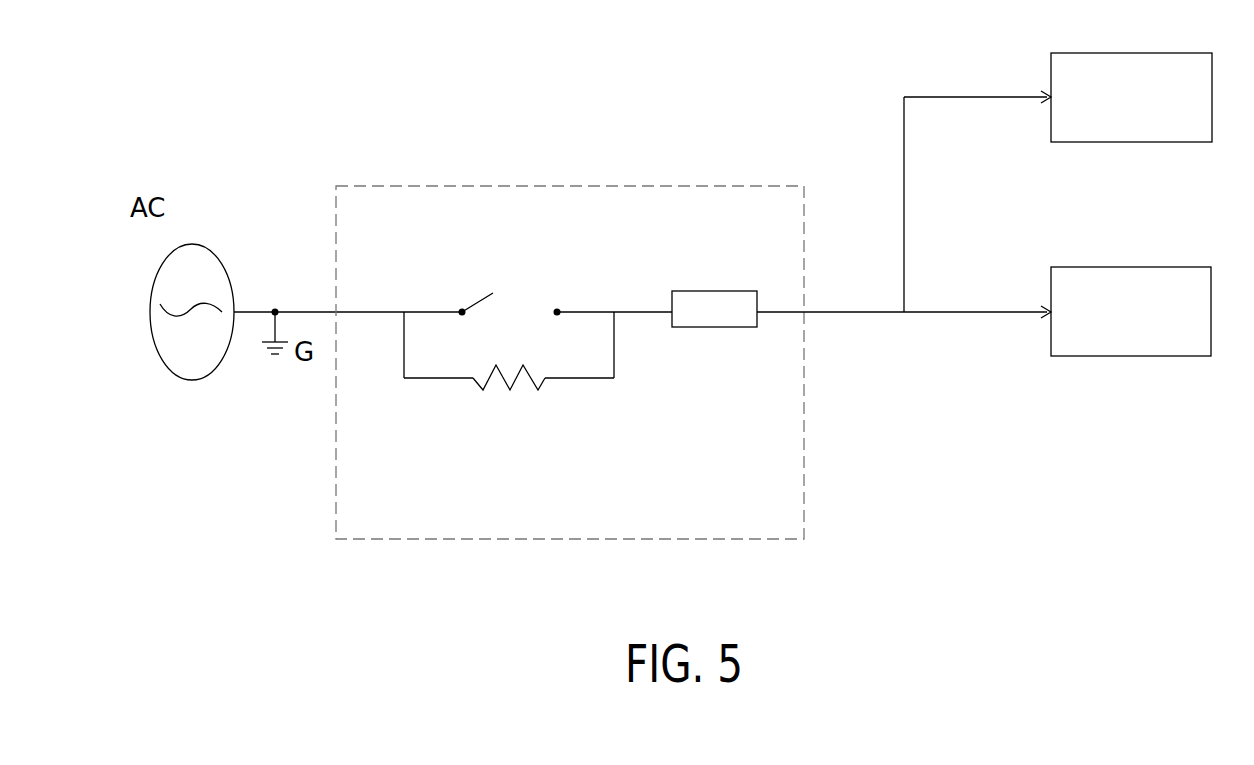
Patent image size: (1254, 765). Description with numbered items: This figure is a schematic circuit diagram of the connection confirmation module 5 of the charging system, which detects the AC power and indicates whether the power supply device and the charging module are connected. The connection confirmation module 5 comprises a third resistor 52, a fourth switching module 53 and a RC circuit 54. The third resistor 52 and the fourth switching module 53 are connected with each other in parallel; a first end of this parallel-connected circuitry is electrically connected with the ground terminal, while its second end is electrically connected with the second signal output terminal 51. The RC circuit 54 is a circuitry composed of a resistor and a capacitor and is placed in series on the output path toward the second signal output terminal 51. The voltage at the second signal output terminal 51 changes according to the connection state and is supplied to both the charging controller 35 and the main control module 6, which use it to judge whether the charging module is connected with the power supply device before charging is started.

The connection confirmation module 5 is at (570, 186).
The second signal output terminal 51 is at (806, 312).
The third resistor 52 is at (508, 400).
The fourth switching module 53 is at (520, 263).
The RC circuit 54 is at (714, 291).
The charging controller 35 is at (1120, 53).
The main control module 6 is at (1120, 267).